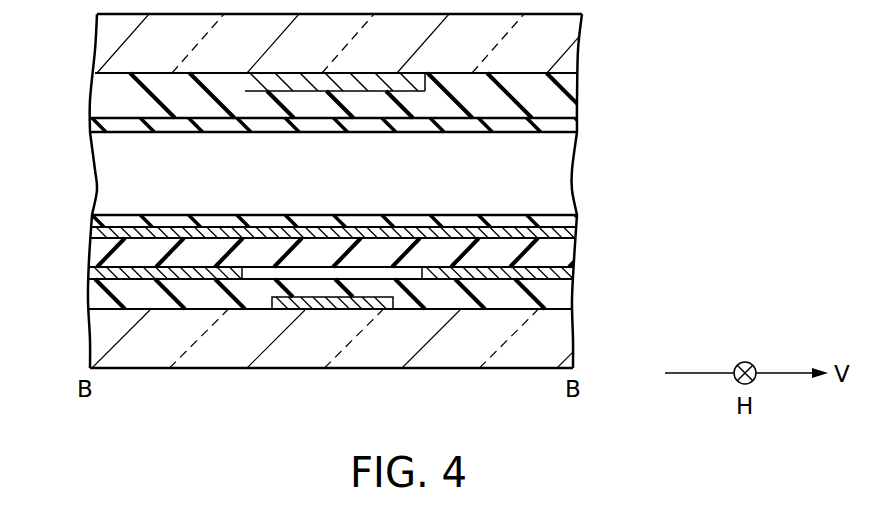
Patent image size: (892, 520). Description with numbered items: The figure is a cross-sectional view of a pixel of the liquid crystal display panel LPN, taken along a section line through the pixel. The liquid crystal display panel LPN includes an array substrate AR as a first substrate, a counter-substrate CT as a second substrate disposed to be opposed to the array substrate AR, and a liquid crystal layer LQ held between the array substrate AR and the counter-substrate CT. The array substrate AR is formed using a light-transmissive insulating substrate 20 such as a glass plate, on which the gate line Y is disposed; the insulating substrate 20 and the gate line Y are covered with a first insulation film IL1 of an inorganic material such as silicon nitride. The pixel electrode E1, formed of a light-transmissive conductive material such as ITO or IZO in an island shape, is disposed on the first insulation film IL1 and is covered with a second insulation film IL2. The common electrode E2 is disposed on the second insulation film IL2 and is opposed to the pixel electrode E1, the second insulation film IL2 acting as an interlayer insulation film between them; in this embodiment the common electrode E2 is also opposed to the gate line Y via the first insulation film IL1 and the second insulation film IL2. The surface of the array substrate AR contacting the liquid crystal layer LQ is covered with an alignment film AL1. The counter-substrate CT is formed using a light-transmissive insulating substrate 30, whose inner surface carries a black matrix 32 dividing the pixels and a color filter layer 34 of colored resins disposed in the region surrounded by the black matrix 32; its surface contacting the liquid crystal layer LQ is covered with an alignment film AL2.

The insulating substrate 30 is at (570, 37).
The black matrix 32 is at (425, 83).
The color filter layer 34 is at (570, 105).
The alignment film AL2 is at (578, 129).
The liquid crystal layer LQ is at (573, 178).
The alignment film AL1 is at (578, 221).
The common electrode E2 is at (578, 231).
The second insulation film IL2 is at (578, 253).
The pixel electrode E1 is at (578, 274).
The first insulation film IL1 is at (578, 297).
The gate line Y is at (328, 301).
The insulating substrate 20 is at (575, 351).
The liquid crystal display panel LPN is at (703, 201).
The counter-substrate CT is at (334, 80).
The array substrate AR is at (354, 311).